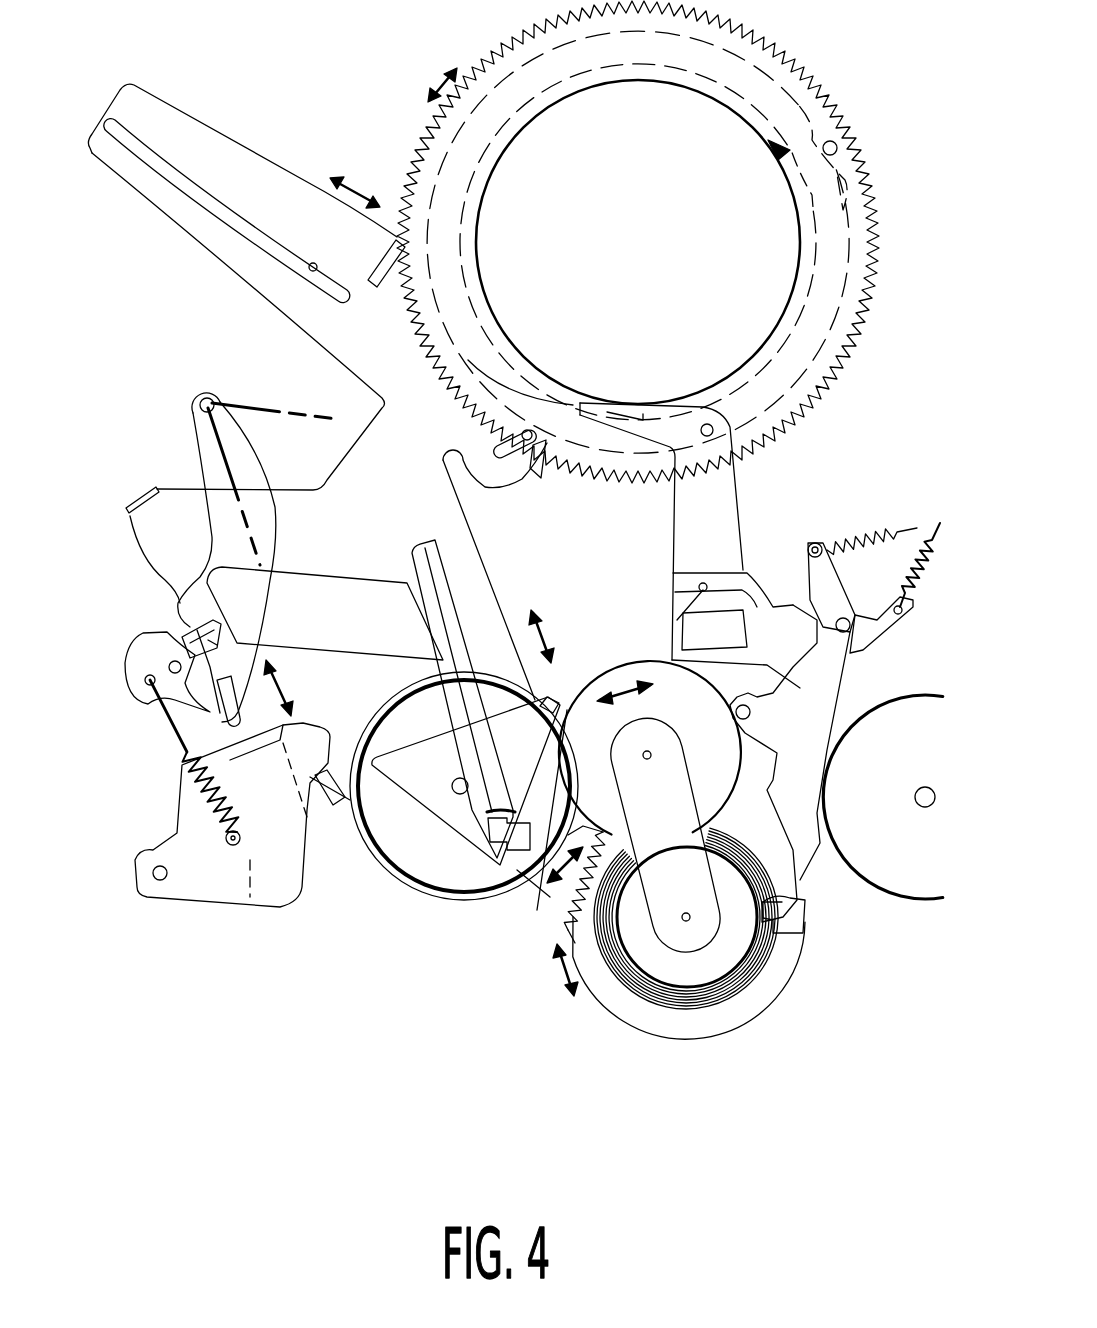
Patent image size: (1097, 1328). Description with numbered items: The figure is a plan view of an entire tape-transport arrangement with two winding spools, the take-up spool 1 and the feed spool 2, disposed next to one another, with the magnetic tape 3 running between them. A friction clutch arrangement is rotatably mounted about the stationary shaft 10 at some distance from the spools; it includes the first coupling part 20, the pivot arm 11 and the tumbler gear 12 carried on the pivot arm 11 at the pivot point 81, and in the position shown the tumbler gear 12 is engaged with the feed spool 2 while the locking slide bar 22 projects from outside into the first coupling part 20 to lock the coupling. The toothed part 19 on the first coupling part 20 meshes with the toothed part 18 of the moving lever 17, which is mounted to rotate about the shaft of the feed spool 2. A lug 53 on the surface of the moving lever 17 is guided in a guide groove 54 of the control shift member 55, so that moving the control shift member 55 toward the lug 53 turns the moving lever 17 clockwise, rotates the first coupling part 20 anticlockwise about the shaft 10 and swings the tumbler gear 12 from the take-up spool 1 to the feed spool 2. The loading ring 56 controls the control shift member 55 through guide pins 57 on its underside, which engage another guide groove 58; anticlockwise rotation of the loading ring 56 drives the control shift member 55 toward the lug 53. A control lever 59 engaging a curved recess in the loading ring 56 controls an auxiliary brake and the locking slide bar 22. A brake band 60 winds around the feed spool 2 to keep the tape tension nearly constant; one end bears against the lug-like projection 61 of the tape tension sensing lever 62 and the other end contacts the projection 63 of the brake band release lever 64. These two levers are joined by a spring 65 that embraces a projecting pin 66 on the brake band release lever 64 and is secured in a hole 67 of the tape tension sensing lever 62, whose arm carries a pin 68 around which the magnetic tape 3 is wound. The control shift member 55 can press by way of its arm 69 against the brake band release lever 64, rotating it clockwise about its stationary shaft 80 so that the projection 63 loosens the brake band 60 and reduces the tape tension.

The take-up spool 1 is at (880, 870).
The feed spool 2 is at (435, 870).
The magnetic tape 3 is at (245, 405).
The shaft 10 is at (685, 921).
The pivot arm 11 is at (683, 870).
The tumbler gear 12 is at (645, 672).
The moving lever 17 is at (412, 795).
The toothed part 18 is at (537, 900).
The toothed part 19 is at (563, 917).
The first coupling part 20 is at (682, 1045).
The locking slide bar 22 is at (800, 880).
The lug 53 is at (500, 855).
The guide groove 54 is at (462, 622).
The control shift member 55 is at (210, 213).
The loading ring 56 is at (478, 243).
The guide pins 57 is at (525, 462).
The guide groove 58 is at (487, 440).
The control lever 59 is at (730, 490).
The brake band 60 is at (322, 650).
The lug-like projection 61 is at (183, 632).
The tape tension sensing lever 62 is at (207, 460).
The projection 63 is at (327, 760).
The brake band release lever 64 is at (185, 820).
The spring 65 is at (190, 752).
The projecting pin 66 is at (240, 848).
The hole 67 is at (143, 690).
The pin 68 is at (200, 398).
The arm 69 is at (143, 523).
The stationary shaft 80 is at (160, 873).
The pivot pin 81 is at (650, 753).